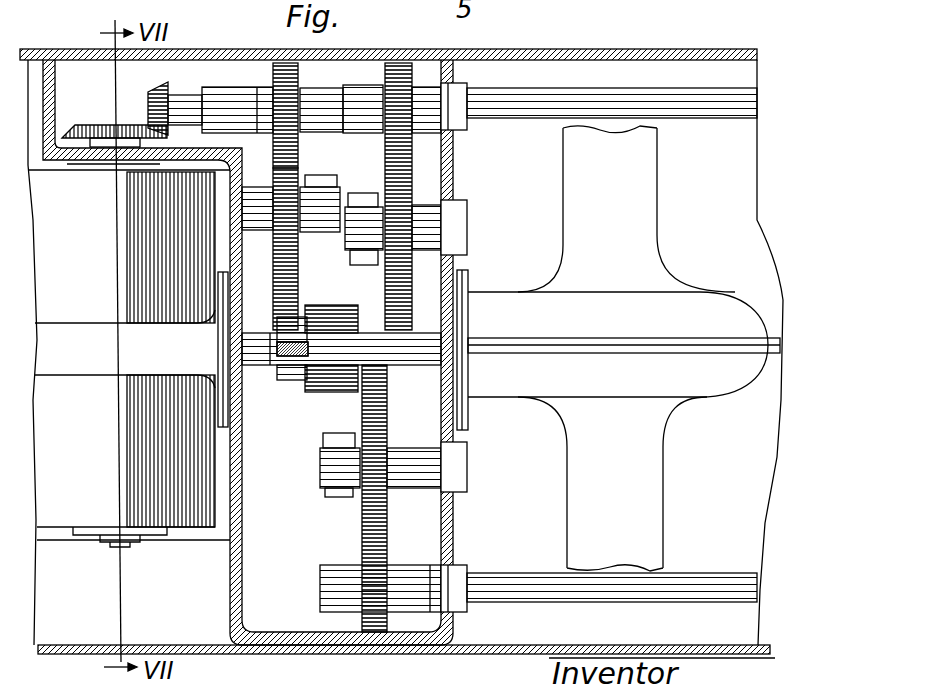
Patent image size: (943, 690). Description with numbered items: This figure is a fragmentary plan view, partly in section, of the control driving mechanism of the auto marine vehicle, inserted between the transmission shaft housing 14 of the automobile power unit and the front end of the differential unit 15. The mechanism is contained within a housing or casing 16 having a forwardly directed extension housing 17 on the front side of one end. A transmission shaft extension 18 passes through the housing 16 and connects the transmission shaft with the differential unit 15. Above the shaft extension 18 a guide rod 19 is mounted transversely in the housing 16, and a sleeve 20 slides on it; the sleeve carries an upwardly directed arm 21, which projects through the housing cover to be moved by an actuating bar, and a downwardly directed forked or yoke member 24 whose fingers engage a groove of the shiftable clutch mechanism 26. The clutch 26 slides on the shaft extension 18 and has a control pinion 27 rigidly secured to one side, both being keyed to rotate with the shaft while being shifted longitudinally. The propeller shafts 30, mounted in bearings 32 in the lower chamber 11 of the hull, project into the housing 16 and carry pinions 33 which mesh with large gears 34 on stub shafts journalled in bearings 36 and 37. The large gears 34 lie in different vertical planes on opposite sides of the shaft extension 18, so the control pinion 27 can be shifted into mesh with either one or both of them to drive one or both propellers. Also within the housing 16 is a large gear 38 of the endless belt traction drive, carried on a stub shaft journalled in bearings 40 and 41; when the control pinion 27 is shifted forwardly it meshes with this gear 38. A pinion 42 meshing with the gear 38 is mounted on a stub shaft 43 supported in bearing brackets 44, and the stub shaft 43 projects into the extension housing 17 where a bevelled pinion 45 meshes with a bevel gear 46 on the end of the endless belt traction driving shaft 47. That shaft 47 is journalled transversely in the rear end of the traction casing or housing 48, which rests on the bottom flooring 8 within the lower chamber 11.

The bottom or flooring 8 is at (410, 357).
The lower chamber 11 is at (656, 52).
The transmission shaft housing 14 is at (125, 349).
The differential unit 15 is at (685, 308).
The housing or casing 16 is at (240, 598).
The forwardly directed extension housing 17 is at (55, 86).
The transmission shaft extension 18 is at (263, 364).
The guide rod 19 is at (341, 346).
The sleeve 20 is at (297, 348).
The upwardly directed arm 21 is at (274, 350).
The forked or yoke member 24 is at (292, 372).
The shiftable clutch mechanism 26 is at (282, 320).
The control pinion 27 is at (334, 378).
The propeller shafts 30 is at (727, 82).
The bearings 32 is at (457, 110).
The pinions 33 is at (420, 128).
The large gears 34 is at (398, 203).
The bearings 36 is at (467, 228).
The bearings 37 is at (362, 222).
The large gear 38 is at (282, 262).
The bearings 40 is at (312, 207).
The bearings 41 is at (252, 194).
The pinion 42 is at (292, 82).
The stub shaft 43 is at (190, 108).
The bearing brackets 44 is at (238, 108).
The bevelled pinion 45 is at (162, 100).
The bevel gear 46 is at (108, 128).
The endless belt traction driving shaft 47 is at (127, 545).
The casing or housing 48 is at (129, 352).